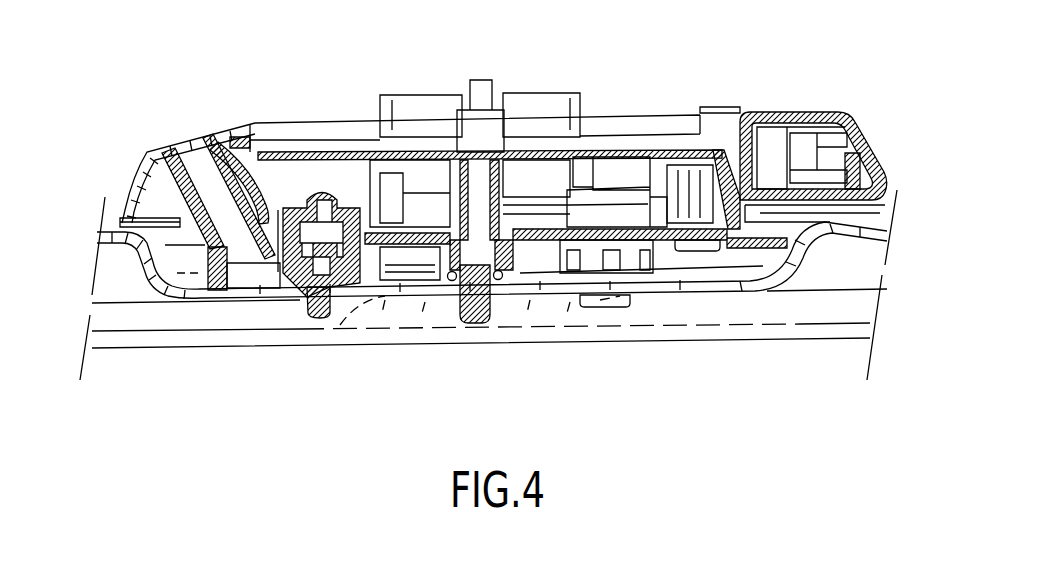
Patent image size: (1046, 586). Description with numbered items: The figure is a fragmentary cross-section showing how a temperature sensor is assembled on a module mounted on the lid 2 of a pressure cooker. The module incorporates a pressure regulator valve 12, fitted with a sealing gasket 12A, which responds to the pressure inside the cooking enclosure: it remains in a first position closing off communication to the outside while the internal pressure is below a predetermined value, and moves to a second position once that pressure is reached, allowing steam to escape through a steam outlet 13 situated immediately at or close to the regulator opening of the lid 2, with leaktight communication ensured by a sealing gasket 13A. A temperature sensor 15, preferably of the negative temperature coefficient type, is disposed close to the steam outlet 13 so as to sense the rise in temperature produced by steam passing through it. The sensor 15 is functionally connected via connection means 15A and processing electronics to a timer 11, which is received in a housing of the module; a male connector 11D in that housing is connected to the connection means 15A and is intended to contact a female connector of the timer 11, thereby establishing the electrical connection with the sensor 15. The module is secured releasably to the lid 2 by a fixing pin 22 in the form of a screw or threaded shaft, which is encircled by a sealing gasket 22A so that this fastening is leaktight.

The lid 2 is at (117, 195).
The timer 11 is at (772, 100).
The male connector 11D is at (820, 147).
The valve 12 is at (302, 313).
The sealing gasket 12A is at (322, 316).
The steam outlet 13 is at (200, 163).
The sealing gasket 13A is at (210, 303).
The temperature sensor 15 is at (250, 150).
The connection means 15A is at (318, 151).
The fixing pin 22 is at (493, 307).
The sealing gasket 22A is at (451, 281).